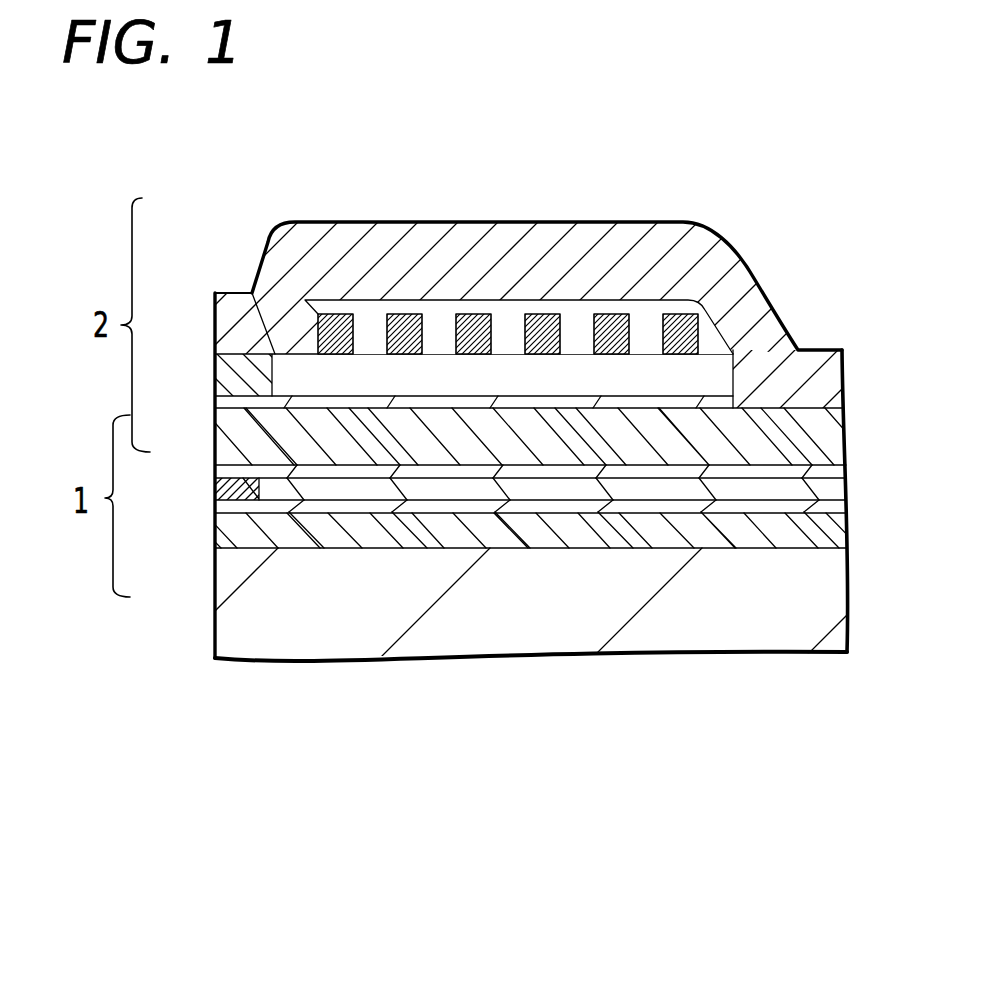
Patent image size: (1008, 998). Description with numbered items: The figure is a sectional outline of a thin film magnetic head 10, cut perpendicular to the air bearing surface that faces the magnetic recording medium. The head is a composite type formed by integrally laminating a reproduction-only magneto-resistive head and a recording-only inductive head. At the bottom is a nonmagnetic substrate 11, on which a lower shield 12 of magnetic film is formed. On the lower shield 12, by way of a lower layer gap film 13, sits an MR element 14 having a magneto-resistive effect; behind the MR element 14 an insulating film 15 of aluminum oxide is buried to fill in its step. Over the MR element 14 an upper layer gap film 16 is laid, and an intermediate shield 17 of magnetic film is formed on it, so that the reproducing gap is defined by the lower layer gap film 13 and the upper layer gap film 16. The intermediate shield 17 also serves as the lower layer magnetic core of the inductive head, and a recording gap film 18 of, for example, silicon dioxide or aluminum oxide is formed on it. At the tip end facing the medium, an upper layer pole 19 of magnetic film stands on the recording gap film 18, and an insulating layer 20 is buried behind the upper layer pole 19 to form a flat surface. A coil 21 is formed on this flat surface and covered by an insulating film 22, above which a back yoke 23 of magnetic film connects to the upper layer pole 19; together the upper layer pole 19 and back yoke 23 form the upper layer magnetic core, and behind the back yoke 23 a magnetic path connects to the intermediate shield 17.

The thin film magnetic head 10 is at (550, 838).
The nonmagnetic substrate 11 is at (357, 638).
The lower shield 12 is at (237, 533).
The lower layer gap film 13 is at (236, 505).
The MR element 14 is at (226, 489).
The insulating film 15 is at (832, 486).
The upper layer gap film 16 is at (235, 472).
The intermediate shield 17 is at (238, 433).
The recording gap film 18 is at (235, 403).
The upper layer pole 19 is at (238, 377).
The insulating layer 20 is at (224, 351).
The coil 21 is at (332, 342).
The insulating film 22 is at (303, 319).
The back yoke 23 is at (283, 245).